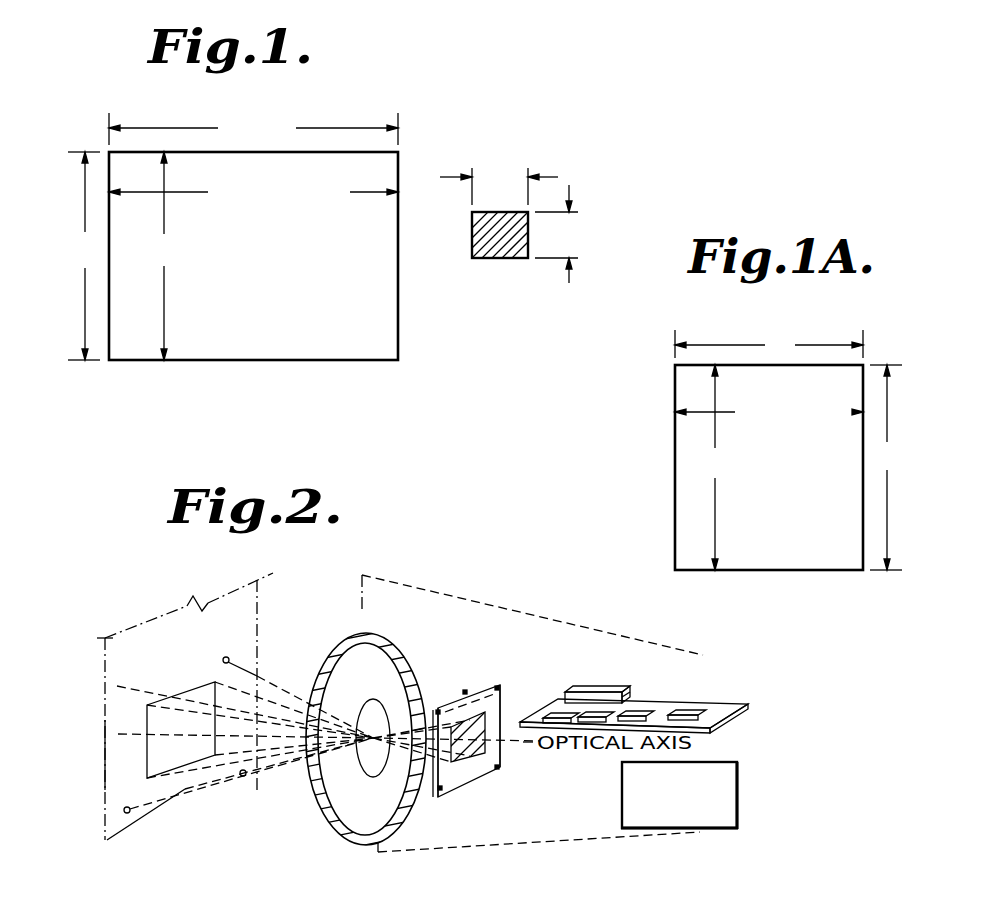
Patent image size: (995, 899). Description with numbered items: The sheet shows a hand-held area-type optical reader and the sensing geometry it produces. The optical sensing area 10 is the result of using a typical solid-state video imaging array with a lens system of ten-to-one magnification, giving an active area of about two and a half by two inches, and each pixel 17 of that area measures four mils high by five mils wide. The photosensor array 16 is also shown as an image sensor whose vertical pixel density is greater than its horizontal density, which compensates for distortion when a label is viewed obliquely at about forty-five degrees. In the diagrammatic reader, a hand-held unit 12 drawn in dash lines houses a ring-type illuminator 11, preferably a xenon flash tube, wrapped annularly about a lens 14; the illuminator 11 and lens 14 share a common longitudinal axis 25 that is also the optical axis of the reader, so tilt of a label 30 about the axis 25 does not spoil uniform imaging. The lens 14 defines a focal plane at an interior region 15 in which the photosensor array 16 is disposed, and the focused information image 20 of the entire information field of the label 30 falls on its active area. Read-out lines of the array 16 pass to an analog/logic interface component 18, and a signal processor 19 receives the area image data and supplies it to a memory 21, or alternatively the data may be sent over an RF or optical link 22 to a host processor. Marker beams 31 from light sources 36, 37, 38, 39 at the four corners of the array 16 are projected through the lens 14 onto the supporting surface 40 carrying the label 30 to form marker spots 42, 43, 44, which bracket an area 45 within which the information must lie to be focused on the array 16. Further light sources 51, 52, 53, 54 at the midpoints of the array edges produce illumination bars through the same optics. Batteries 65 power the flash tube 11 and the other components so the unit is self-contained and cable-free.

In FIG. 1, the optical sensing area 10 is at (398, 334).
In FIG. 1, the pixel 17 is at (472, 257).
In FIG. 1A, the photosensor array 16 is at (785, 556).
In FIG. 2, the photosensor array 16 is at (502, 690).
In FIG. 2, the ring-type illuminator 11 is at (331, 813).
In FIG. 2, the hand-held unit 12 is at (588, 844).
In FIG. 2, the lens 14 is at (364, 702).
In FIG. 2, the interior region 15 is at (465, 817).
In FIG. 2, the analog/logic interface component 18 is at (582, 692).
In FIG. 2, the signal processor 19 is at (702, 706).
In FIG. 2, the focused information image 20 is at (501, 709).
In FIG. 2, the memory 21 is at (660, 703).
In FIG. 2, the RF or optical link 22 is at (626, 693).
In FIG. 2, the longitudinal axis 25 is at (123, 735).
In FIG. 2, the label 30 is at (147, 763).
In FIG. 2, the marker beams 31 is at (134, 683).
In FIG. 2, the light source 36 is at (505, 766).
In FIG. 2, the light source 37 is at (441, 792).
In FIG. 2, the light source 38 is at (498, 686).
In FIG. 2, the light source 39 is at (437, 707).
In FIG. 2, the supporting surface 40 is at (170, 831).
In FIG. 2, the marker spot 42 is at (226, 657).
In FIG. 2, the marker spot 43 is at (124, 812).
In FIG. 2, the marker spot 44 is at (244, 776).
In FIG. 2, the area 45 is at (105, 757).
In FIG. 2, the light source 51 is at (466, 691).
In FIG. 2, the light source 52 is at (505, 727).
In FIG. 2, the light source 53 is at (470, 786).
In FIG. 2, the light source 54 is at (432, 783).
In FIG. 2, the batteries 65 is at (738, 786).